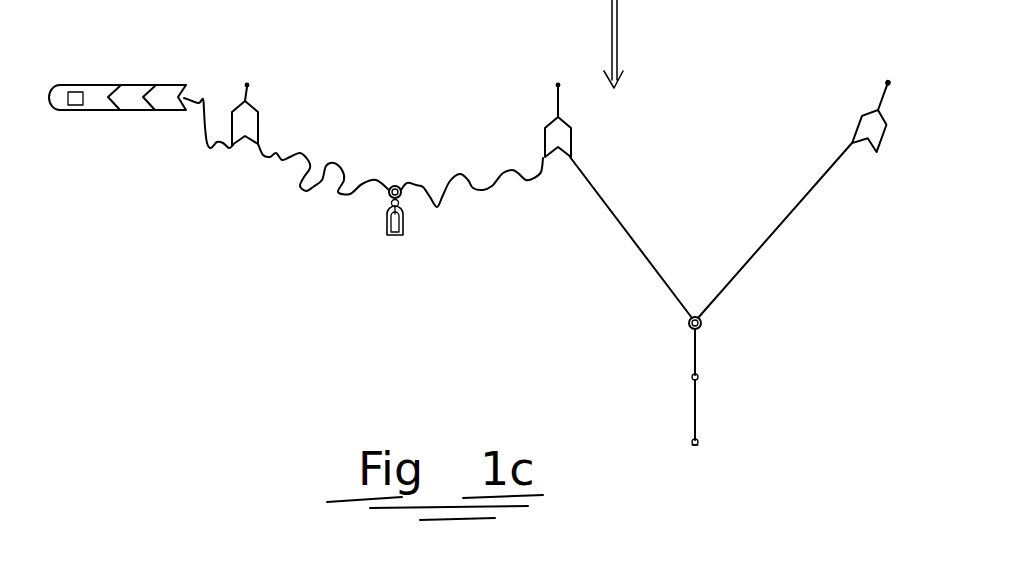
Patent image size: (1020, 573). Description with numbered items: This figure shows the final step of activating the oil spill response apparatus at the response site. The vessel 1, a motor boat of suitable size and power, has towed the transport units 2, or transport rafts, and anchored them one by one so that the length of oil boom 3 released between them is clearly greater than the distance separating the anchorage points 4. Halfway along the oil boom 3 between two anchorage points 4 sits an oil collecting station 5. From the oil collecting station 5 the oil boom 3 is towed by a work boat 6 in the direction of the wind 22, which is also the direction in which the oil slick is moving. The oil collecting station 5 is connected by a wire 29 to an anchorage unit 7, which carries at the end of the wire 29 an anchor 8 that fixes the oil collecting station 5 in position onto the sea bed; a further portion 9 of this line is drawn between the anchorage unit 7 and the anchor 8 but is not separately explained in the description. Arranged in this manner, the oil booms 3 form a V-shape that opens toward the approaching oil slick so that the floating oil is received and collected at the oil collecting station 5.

The vessel 1 is at (93, 90).
The transport unit 2 is at (140, 88).
The oil boom 3 is at (200, 100).
The anchorage point 4 is at (250, 87).
The oil collecting station 5 is at (389, 196).
The work boat 6 is at (392, 237).
The anchorage unit 7 is at (405, 203).
The anchor 8 is at (700, 440).
The leader line 9 is at (692, 412).
The direction of the wind 22 is at (620, 28).
The wire 29 is at (692, 353).